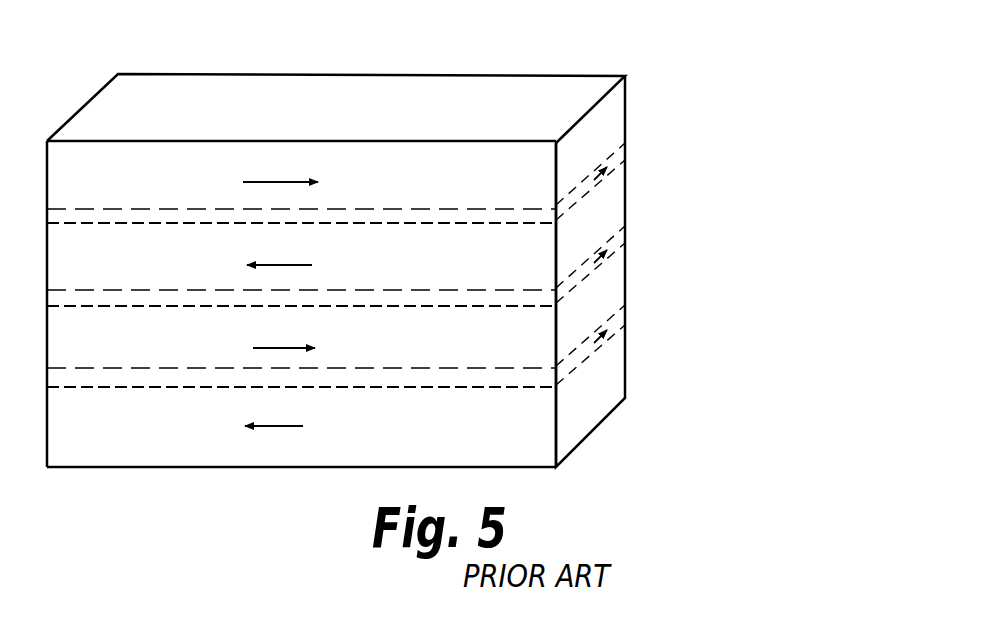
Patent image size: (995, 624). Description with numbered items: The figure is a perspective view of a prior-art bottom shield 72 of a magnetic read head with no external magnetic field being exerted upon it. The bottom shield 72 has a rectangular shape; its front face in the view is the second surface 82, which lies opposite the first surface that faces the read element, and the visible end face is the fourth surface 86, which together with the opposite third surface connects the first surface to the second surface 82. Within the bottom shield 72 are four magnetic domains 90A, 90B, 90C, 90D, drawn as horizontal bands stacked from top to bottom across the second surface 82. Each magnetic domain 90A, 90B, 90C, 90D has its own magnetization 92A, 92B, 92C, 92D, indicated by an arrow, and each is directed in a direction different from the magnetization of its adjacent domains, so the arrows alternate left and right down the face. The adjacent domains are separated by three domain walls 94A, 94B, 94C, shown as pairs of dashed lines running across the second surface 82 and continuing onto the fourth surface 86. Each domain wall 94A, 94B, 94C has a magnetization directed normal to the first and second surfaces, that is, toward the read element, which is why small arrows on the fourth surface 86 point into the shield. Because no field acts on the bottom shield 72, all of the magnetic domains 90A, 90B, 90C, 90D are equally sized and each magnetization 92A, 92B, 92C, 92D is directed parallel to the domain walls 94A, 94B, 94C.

The bottom shield 72 is at (590, 61).
The second surface 82 is at (533, 450).
The fourth surface 86 is at (610, 377).
The magnetic domain 90A is at (523, 195).
The magnetic domain 90B is at (527, 276).
The magnetic domain 90C is at (525, 362).
The magnetic domain 90D is at (523, 441).
The magnetization 92A is at (307, 186).
The magnetization 92B is at (304, 267).
The magnetization 92C is at (307, 350).
The magnetization 92D is at (301, 428).
The domain wall 94A is at (80, 214).
The domain wall 94B is at (97, 291).
The domain wall 94C is at (80, 373).